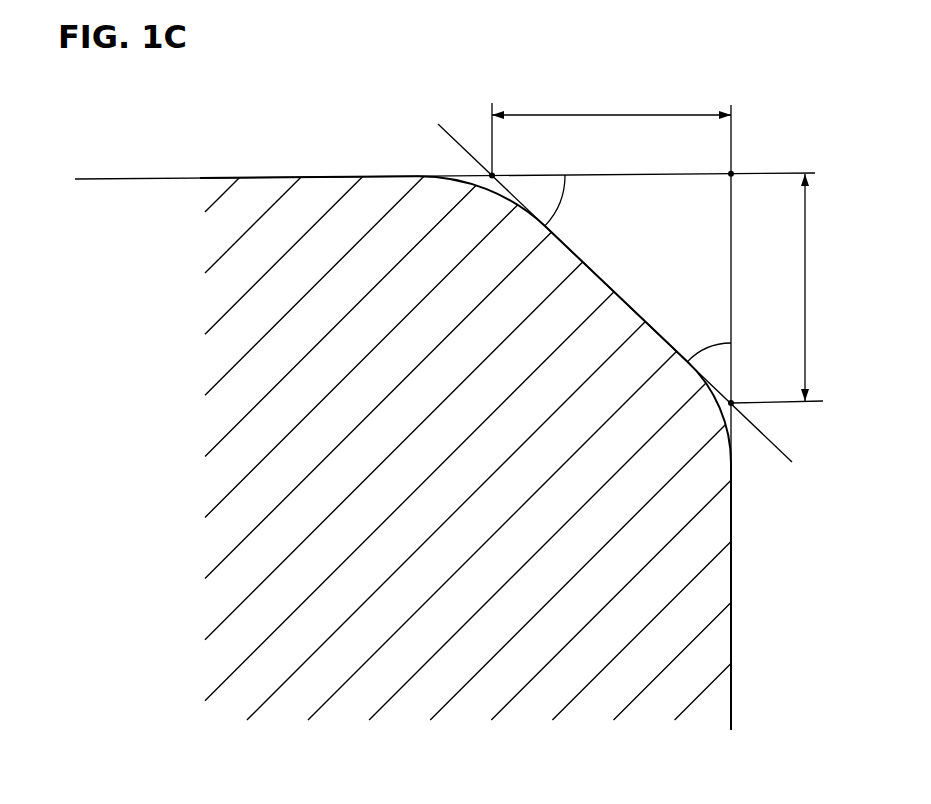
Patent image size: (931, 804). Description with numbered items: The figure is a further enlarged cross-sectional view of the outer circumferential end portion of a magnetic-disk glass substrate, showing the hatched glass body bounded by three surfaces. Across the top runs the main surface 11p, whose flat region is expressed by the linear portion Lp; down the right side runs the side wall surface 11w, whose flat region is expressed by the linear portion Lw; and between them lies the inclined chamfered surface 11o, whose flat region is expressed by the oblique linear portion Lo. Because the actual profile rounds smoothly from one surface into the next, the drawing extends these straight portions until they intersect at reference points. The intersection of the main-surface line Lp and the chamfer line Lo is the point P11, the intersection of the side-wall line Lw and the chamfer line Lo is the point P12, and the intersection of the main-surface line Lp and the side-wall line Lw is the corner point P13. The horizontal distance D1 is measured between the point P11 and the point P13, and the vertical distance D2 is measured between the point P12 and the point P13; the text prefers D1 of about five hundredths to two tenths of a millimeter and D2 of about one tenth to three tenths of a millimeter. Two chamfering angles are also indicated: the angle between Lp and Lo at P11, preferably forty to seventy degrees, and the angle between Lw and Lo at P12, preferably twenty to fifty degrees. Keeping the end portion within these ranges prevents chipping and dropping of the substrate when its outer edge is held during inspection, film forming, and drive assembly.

The linear portion of the main surface Lp is at (168, 176).
The main surface 11p is at (303, 176).
The oblique surface 11o is at (612, 288).
The side wall surface 11w is at (734, 558).
The linear portion of the side wall surface Lw is at (738, 702).
The oblique reference line Lo is at (790, 452).
The intersection of the linear portions of the main surface and the chamfered surfac P11 is at (484, 163).
The intersection of the linear portions of the side wall surface and the chamfered s P12 is at (736, 394).
The intersection of the linear portions of the main surface and the side wall surfac P13 is at (738, 169).
The distance between point P11 and point P13 D1 is at (611, 133).
The distance between point P12 and point P13 D2 is at (782, 288).